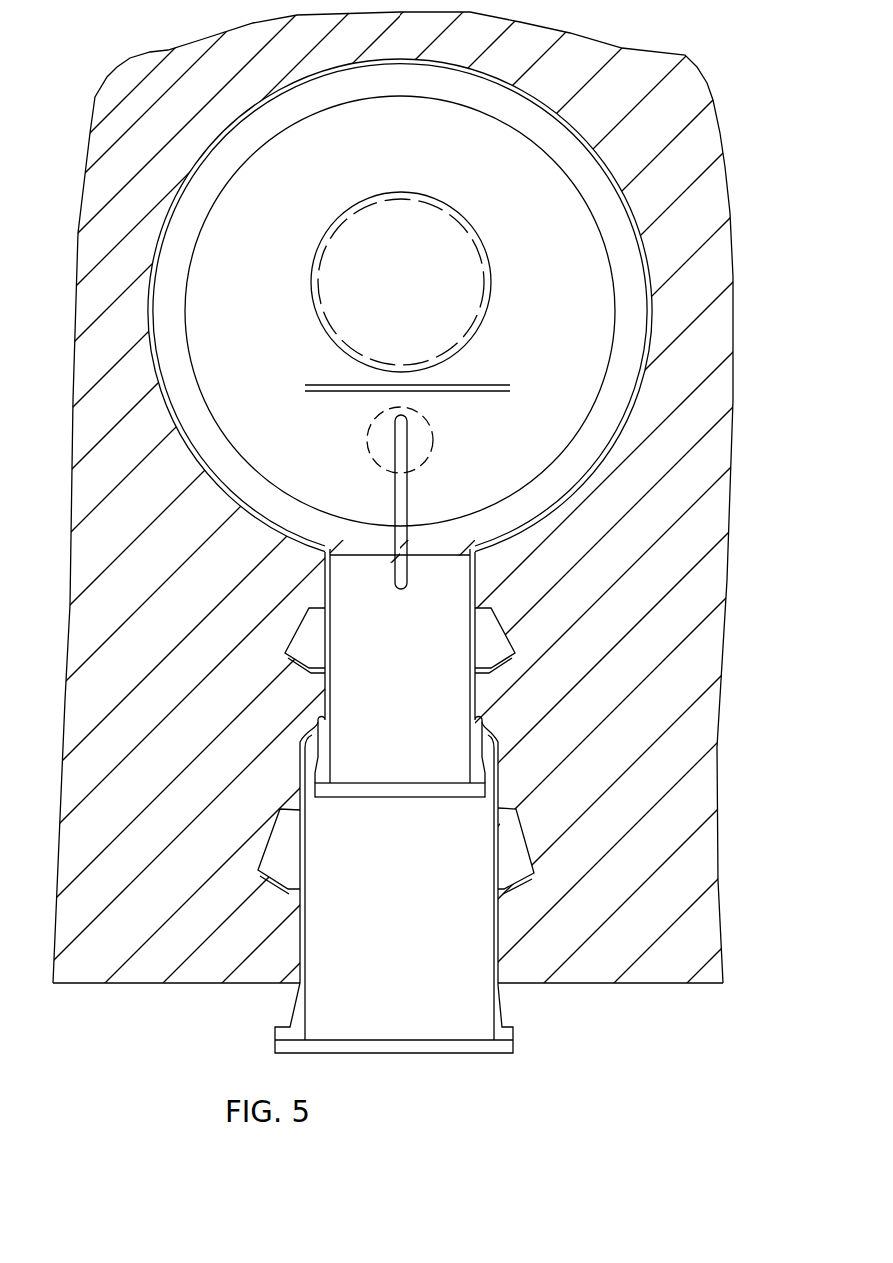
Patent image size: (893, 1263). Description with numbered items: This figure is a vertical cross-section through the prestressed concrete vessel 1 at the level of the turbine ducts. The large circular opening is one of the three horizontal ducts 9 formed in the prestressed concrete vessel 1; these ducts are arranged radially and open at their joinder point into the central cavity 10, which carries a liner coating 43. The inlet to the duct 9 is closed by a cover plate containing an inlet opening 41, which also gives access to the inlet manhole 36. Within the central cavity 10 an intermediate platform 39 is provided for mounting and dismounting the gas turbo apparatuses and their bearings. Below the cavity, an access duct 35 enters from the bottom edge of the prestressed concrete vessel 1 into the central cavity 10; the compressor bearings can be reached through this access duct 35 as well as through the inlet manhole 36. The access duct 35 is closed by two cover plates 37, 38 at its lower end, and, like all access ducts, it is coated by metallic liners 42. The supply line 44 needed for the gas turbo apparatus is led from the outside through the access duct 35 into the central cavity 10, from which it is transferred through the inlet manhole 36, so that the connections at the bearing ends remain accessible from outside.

The prestressed concrete vessel 1 is at (679, 178).
The horizontal duct 9 is at (555, 145).
The cavity 10 is at (535, 366).
The access duct 35 is at (450, 707).
The inlet manhole 36 is at (428, 457).
The cover plate 37 is at (442, 790).
The cover plate 38 is at (455, 1045).
The intermediate platform 39 is at (318, 392).
The inlet opening 41 is at (416, 256).
The metallic liner 42 is at (495, 857).
The liner coating 43 is at (650, 275).
The supply line 44 is at (395, 503).